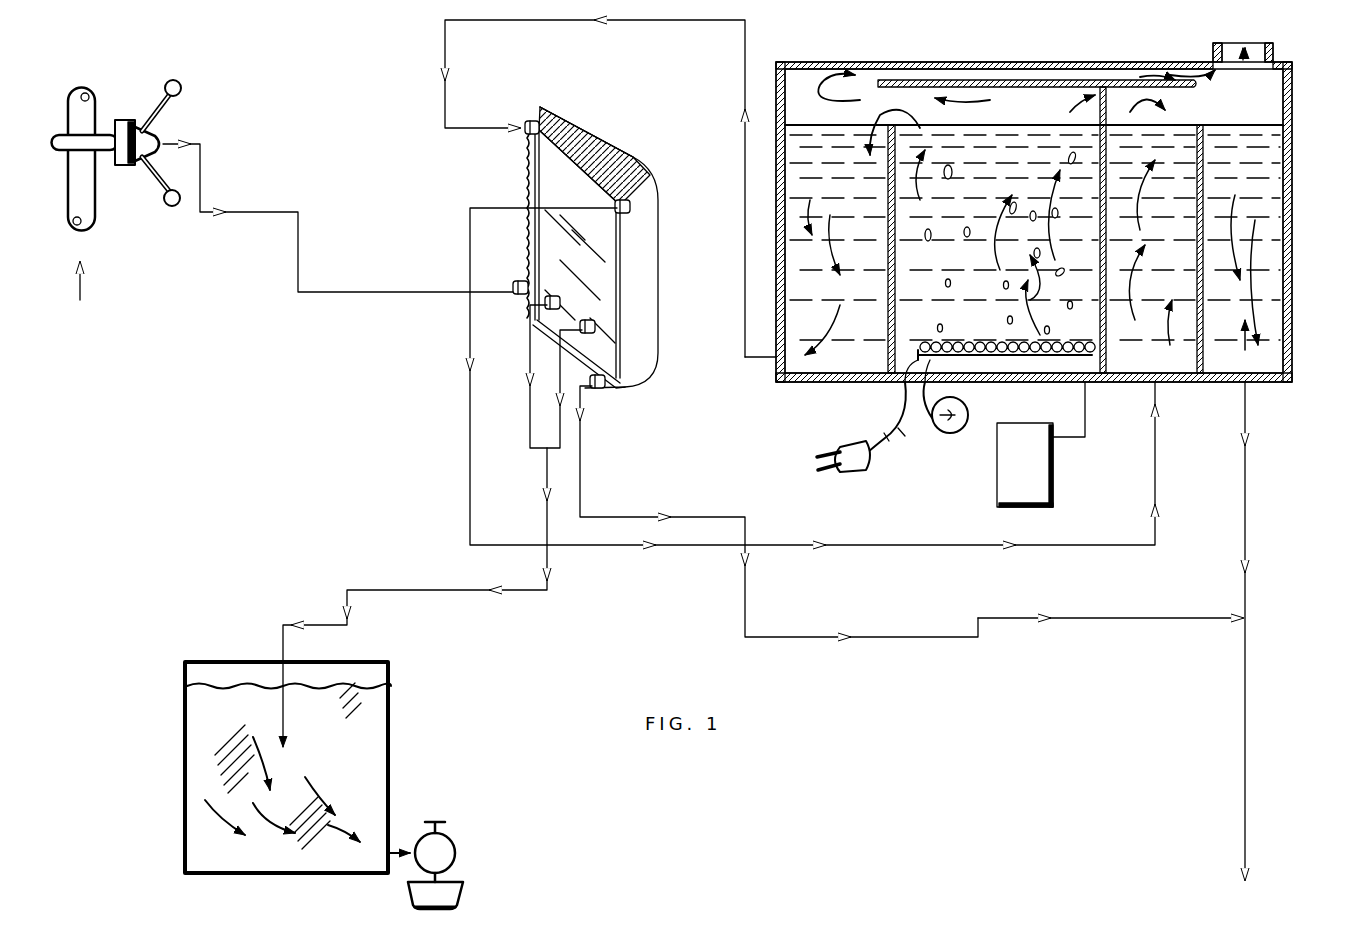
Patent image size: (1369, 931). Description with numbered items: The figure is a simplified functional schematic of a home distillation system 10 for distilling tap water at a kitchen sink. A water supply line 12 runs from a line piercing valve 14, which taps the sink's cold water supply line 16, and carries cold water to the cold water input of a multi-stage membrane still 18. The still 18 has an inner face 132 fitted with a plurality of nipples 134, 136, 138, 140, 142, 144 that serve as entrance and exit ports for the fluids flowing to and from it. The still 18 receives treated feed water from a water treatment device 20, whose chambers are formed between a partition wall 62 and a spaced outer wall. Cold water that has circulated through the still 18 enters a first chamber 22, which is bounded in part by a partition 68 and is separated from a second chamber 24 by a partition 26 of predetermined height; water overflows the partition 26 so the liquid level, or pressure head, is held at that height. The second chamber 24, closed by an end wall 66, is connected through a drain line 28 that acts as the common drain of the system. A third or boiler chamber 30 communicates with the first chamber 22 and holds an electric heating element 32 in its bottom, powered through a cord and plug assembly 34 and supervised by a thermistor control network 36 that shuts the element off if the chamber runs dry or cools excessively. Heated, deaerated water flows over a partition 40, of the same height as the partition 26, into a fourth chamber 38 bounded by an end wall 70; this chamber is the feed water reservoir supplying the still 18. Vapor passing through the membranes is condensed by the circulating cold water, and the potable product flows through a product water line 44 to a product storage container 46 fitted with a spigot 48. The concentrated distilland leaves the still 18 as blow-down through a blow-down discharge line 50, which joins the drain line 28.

The distillation system 10 is at (1078, 628).
The water supply line 12 is at (300, 218).
The line piercing valve 14 is at (125, 124).
The cold water supply line 16 is at (108, 138).
The still 18 is at (597, 258).
The water treatment device 20 is at (1026, 235).
The first chamber 22 is at (1178, 384).
The second chamber 24 is at (1288, 226).
The partition 26 is at (1232, 252).
The drain line 28 is at (1247, 506).
The boiler chamber 30 is at (1092, 240).
The electric heating element 32 is at (1000, 345).
The cord and plug assembly 34 is at (880, 463).
The thermistor control network 36 is at (1050, 480).
The fourth chamber 38 is at (797, 250).
The partition 40 is at (905, 232).
The product water line 44 is at (545, 503).
The product storage container 46 is at (392, 700).
The spigot 48 is at (440, 845).
The blow-down discharge line 50 is at (1152, 612).
The partition wall 62 is at (800, 80).
The end wall 66 is at (1290, 128).
The partition 68 is at (1106, 116).
The end wall 70 is at (776, 188).
The inner face 132 is at (594, 165).
The nipple 134 is at (600, 390).
The nipple 136 is at (597, 330).
The nipple 138 is at (548, 310).
The nipple 140 is at (516, 282).
The nipple 142 is at (630, 204).
The nipple 144 is at (531, 120).